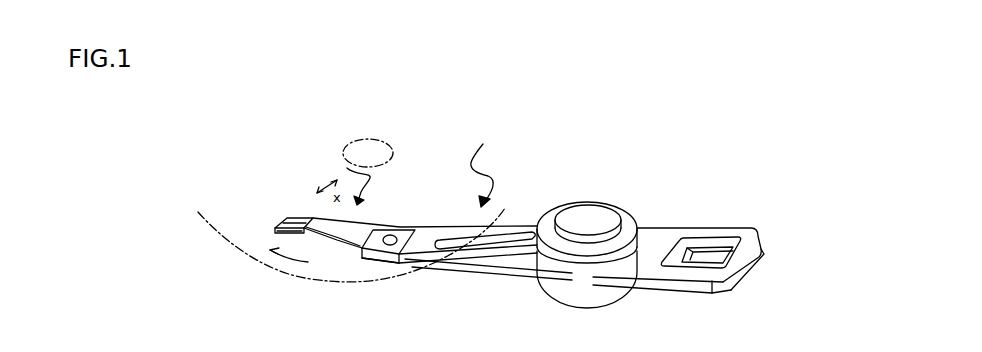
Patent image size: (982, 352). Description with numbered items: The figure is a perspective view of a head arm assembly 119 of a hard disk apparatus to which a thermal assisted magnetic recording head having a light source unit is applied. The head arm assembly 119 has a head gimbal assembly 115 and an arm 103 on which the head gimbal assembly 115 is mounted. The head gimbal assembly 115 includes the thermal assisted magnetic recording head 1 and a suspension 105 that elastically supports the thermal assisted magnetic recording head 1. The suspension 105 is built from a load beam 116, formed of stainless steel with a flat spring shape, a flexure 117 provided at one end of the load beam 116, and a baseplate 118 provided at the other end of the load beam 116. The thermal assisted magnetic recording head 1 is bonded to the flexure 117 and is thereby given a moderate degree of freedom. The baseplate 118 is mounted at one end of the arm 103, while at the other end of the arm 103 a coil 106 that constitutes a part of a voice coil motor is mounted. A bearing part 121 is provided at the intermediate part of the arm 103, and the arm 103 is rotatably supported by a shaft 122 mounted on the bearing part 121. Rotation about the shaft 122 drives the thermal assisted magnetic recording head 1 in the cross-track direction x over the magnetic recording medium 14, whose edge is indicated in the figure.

The thermal assisted magnetic recording head 1 is at (303, 219).
The magnetic recording medium 14 is at (305, 280).
The arm 103 is at (460, 268).
The suspension 105 is at (355, 262).
The coil 106 is at (749, 273).
The head gimbal assembly 115 is at (345, 172).
The load beam 116 is at (372, 230).
The flexure 117 is at (275, 227).
The baseplate 118 is at (415, 231).
The head arm assembly 119 is at (488, 166).
The bearing part 121 is at (548, 208).
The shaft 122 is at (597, 213).